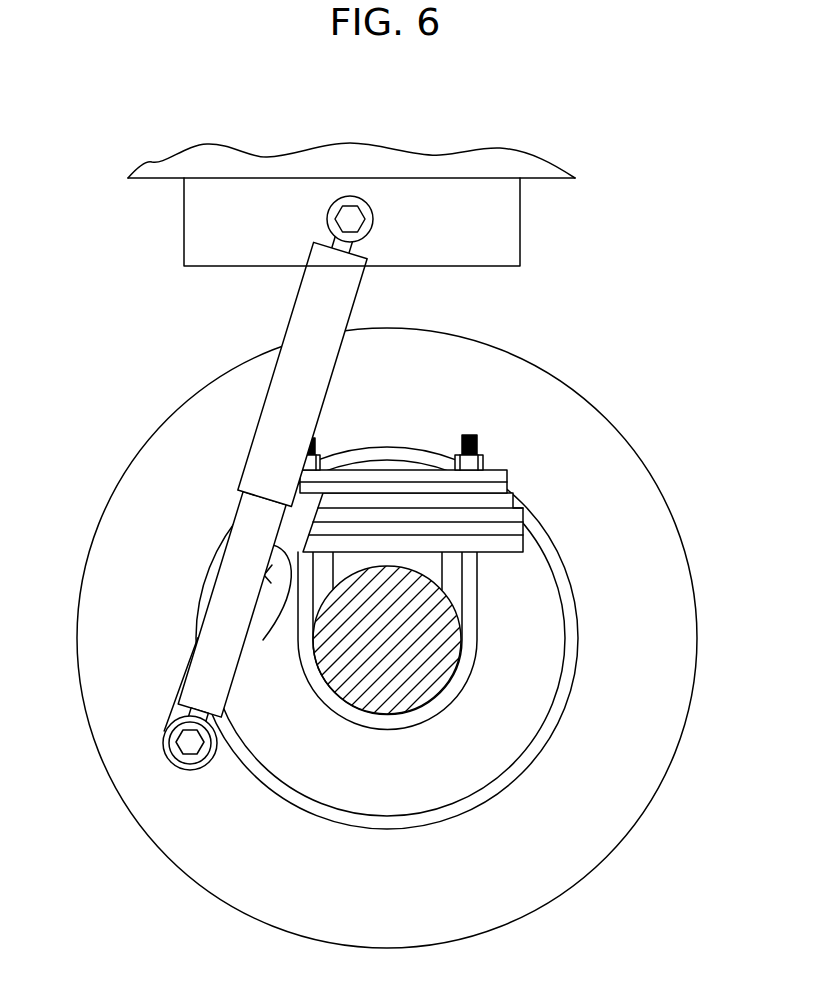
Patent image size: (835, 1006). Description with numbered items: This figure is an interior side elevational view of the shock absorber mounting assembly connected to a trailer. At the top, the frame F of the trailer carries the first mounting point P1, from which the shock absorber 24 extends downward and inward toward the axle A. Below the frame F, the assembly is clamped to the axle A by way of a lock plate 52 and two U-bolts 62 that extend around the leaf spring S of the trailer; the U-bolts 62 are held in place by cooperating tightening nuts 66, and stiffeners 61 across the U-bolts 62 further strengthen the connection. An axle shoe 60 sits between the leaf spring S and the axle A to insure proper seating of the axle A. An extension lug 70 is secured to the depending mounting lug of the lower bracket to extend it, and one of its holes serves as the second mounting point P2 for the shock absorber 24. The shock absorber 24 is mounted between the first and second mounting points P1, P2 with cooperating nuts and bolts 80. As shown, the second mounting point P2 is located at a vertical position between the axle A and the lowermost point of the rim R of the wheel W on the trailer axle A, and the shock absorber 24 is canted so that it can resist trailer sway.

The shock absorber 24 is at (298, 338).
The lock plate 52 is at (500, 490).
The axle shoe 60 is at (430, 565).
The stiffeners 61 is at (507, 474).
The U-bolts 62 is at (406, 716).
The tightening nuts 66 is at (482, 460).
The extension lug 70 is at (253, 650).
The nuts and bolts 80 is at (347, 213).
The axle A is at (377, 695).
The frame F is at (445, 167).
The first mounting point P1 is at (330, 214).
The second mounting point P2 is at (176, 750).
The rim R is at (423, 820).
The leaf spring S is at (525, 513).
The wheel W is at (537, 868).